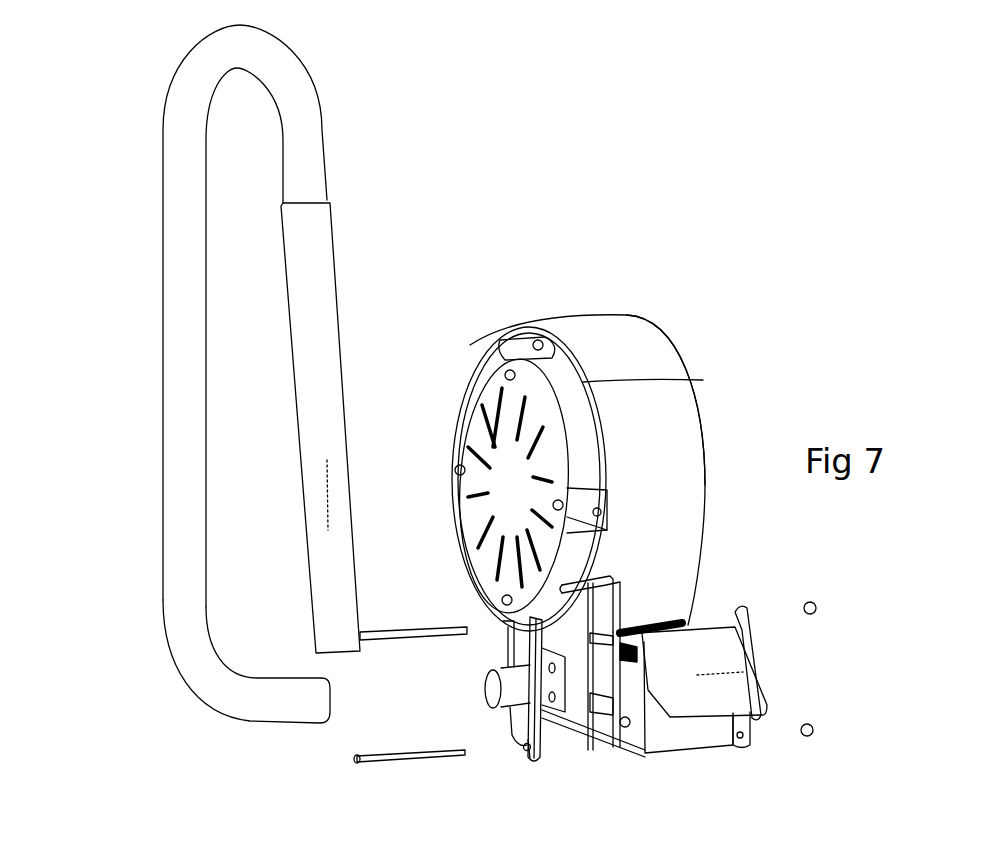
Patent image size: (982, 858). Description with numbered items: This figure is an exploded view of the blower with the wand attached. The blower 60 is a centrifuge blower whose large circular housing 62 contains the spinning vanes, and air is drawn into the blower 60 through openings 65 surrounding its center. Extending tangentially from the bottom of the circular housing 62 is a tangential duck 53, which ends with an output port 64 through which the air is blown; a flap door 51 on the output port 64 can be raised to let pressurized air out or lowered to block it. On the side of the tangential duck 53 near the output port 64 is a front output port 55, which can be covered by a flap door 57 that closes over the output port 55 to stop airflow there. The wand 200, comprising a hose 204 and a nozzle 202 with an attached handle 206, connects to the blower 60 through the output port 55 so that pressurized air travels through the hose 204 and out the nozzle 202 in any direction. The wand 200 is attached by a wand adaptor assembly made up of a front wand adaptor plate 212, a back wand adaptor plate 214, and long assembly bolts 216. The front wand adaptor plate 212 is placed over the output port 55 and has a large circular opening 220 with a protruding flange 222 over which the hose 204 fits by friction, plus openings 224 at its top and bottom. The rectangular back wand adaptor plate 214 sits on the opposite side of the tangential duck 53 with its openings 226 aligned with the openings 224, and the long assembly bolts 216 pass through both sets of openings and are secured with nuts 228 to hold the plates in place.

The wand 200 is at (180, 84).
The nozzle 202 is at (178, 237).
The hose 204 is at (320, 355).
The handle 206 is at (407, 630).
The front wand adaptor plate 212 is at (513, 653).
The back wand adaptor plate 214 is at (896, 575).
The long assembly bolts 216 is at (352, 761).
The large circular opening 220 is at (492, 690).
The flange 222 is at (507, 698).
The openings 224 is at (537, 760).
The openings 226 is at (745, 607).
The nuts 228 is at (810, 725).
The blower 60 is at (607, 325).
The circular housing 62 is at (662, 410).
The openings 65 is at (496, 397).
The tangential duck 53 is at (696, 618).
The flap door 51 is at (745, 692).
The front output port 55 is at (597, 690).
The flap door 57 is at (612, 725).
The output port 64 is at (693, 733).